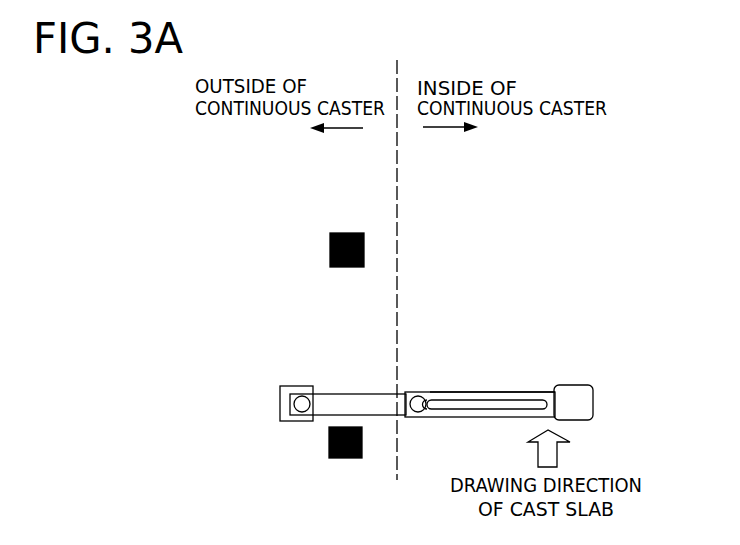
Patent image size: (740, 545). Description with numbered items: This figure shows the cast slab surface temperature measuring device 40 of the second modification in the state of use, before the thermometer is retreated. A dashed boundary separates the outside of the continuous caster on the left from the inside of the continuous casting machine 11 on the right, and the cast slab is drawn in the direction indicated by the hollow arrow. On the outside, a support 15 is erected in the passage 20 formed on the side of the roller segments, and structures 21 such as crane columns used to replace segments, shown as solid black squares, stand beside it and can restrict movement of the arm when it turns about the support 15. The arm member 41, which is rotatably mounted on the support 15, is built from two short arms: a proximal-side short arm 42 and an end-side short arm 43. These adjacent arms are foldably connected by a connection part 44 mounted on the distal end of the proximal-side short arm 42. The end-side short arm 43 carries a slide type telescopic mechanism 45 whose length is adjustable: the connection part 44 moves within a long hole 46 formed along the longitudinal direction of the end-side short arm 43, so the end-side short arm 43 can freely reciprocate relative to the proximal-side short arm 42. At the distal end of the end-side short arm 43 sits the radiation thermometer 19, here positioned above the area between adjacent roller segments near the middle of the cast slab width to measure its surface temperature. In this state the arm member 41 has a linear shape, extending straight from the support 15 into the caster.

The continuous casting machine 11 is at (468, 70).
The support 15 is at (279, 408).
The radiation thermometer 19 is at (576, 385).
The passage 20 is at (287, 255).
The structure 21 is at (342, 233).
The cast slab surface temperature measuring device 40 is at (289, 379).
The arm member 41 is at (422, 357).
The proximal-side short arm 42 is at (358, 394).
The end-side short arm 43 is at (498, 392).
The connection part 44 is at (423, 398).
The telescopic mechanism 45 is at (524, 398).
The long hole 46 is at (443, 405).